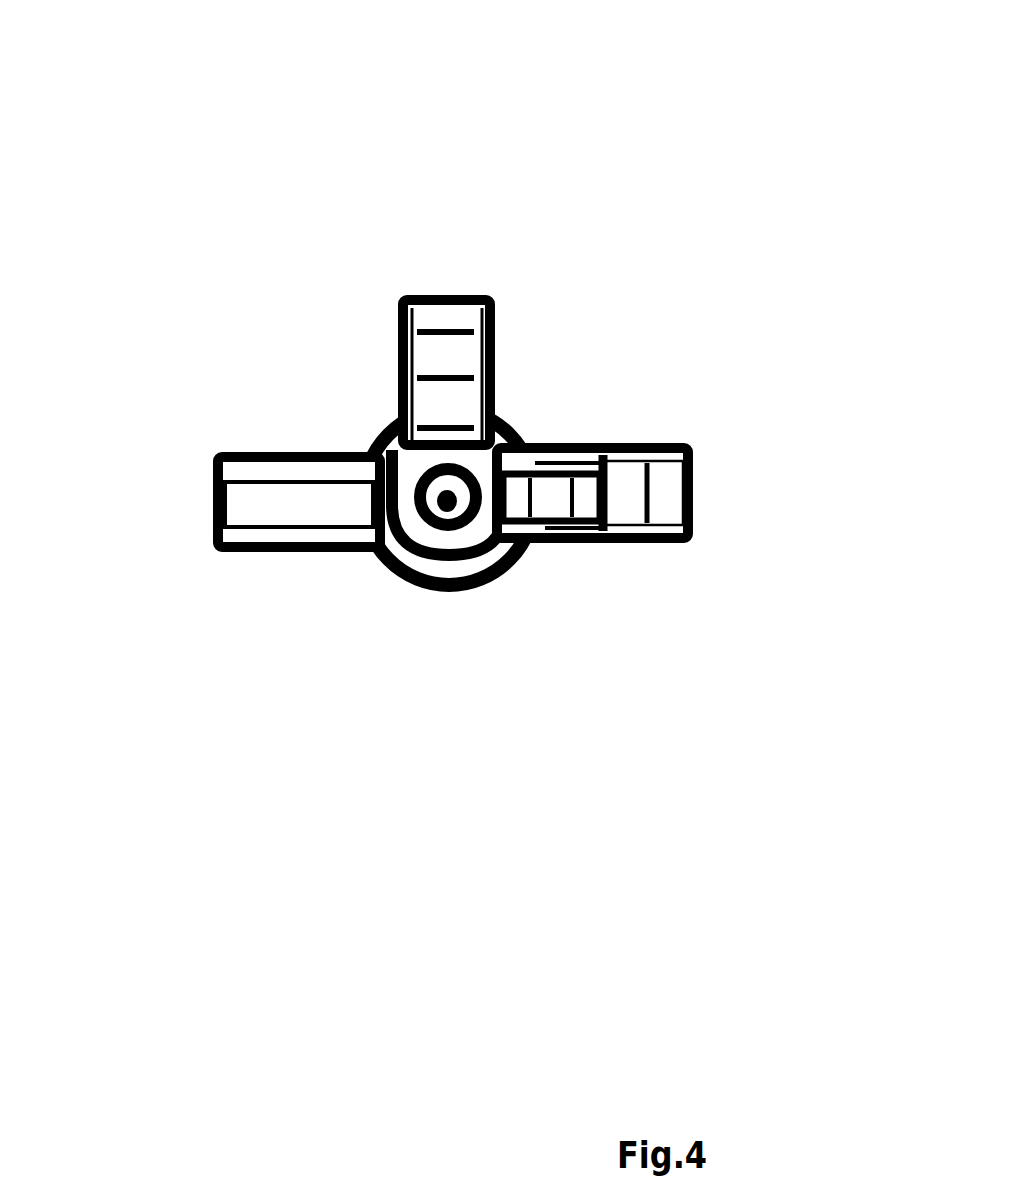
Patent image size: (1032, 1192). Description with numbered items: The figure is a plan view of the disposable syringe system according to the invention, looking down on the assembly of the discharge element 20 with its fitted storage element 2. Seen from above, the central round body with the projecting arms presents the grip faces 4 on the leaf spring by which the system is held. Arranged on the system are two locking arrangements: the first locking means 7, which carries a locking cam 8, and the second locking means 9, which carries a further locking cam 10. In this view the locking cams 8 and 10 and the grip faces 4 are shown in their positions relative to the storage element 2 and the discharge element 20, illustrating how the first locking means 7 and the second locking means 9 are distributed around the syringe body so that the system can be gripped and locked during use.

The storage element 2 is at (447, 533).
The grip faces 4 is at (272, 506).
The first locking means 7 is at (555, 543).
The locking cam 8 is at (550, 503).
The second locking means 9 is at (452, 322).
The further locking cam 10 is at (448, 452).
The discharge element 20 is at (500, 578).